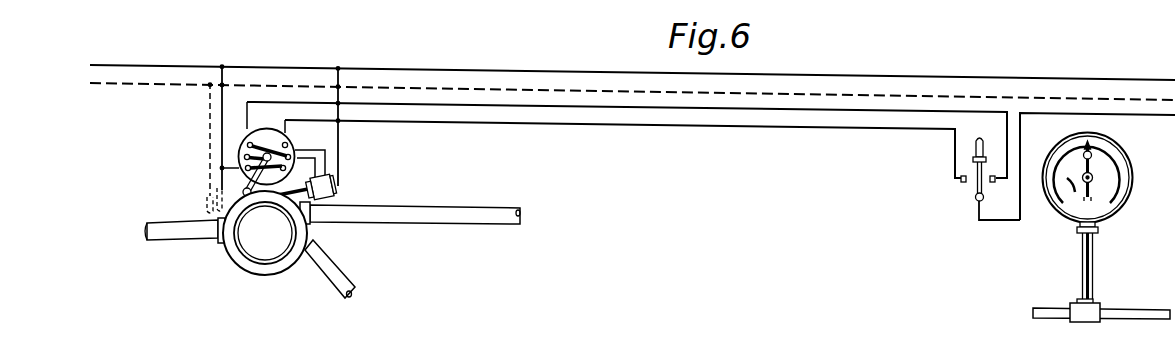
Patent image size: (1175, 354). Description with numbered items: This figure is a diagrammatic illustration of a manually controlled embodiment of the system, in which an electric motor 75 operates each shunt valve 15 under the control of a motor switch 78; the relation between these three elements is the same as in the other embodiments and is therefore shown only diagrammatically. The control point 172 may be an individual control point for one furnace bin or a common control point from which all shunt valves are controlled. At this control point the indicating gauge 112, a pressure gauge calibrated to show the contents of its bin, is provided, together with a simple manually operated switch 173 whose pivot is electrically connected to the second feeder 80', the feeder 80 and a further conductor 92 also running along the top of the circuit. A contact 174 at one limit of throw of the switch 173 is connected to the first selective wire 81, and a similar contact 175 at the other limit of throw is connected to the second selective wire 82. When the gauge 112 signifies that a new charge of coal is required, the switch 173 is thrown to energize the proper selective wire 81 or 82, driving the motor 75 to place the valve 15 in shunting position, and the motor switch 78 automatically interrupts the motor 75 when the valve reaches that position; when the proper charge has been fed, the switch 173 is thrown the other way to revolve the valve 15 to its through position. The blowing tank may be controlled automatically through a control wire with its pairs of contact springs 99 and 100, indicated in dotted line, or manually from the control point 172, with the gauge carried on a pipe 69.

The feeder 80 is at (632, 60).
The dashed conductor 92 is at (545, 93).
The first selective wire 81 is at (575, 107).
The second selective wire 82 is at (600, 124).
The motor switch 78 is at (294, 143).
The electric motor 75 is at (346, 173).
The contact spring 99 is at (210, 178).
The contact spring 100 is at (205, 199).
The shunt valve 15 is at (252, 268).
The second feeder 80' is at (1103, 175).
The contact 175 is at (960, 179).
The contact 174 is at (993, 184).
The manually operated switch 173 is at (976, 188).
The control point 172 is at (1030, 254).
The indicating gauge 112 is at (1113, 222).
The pipe 69 is at (1047, 314).